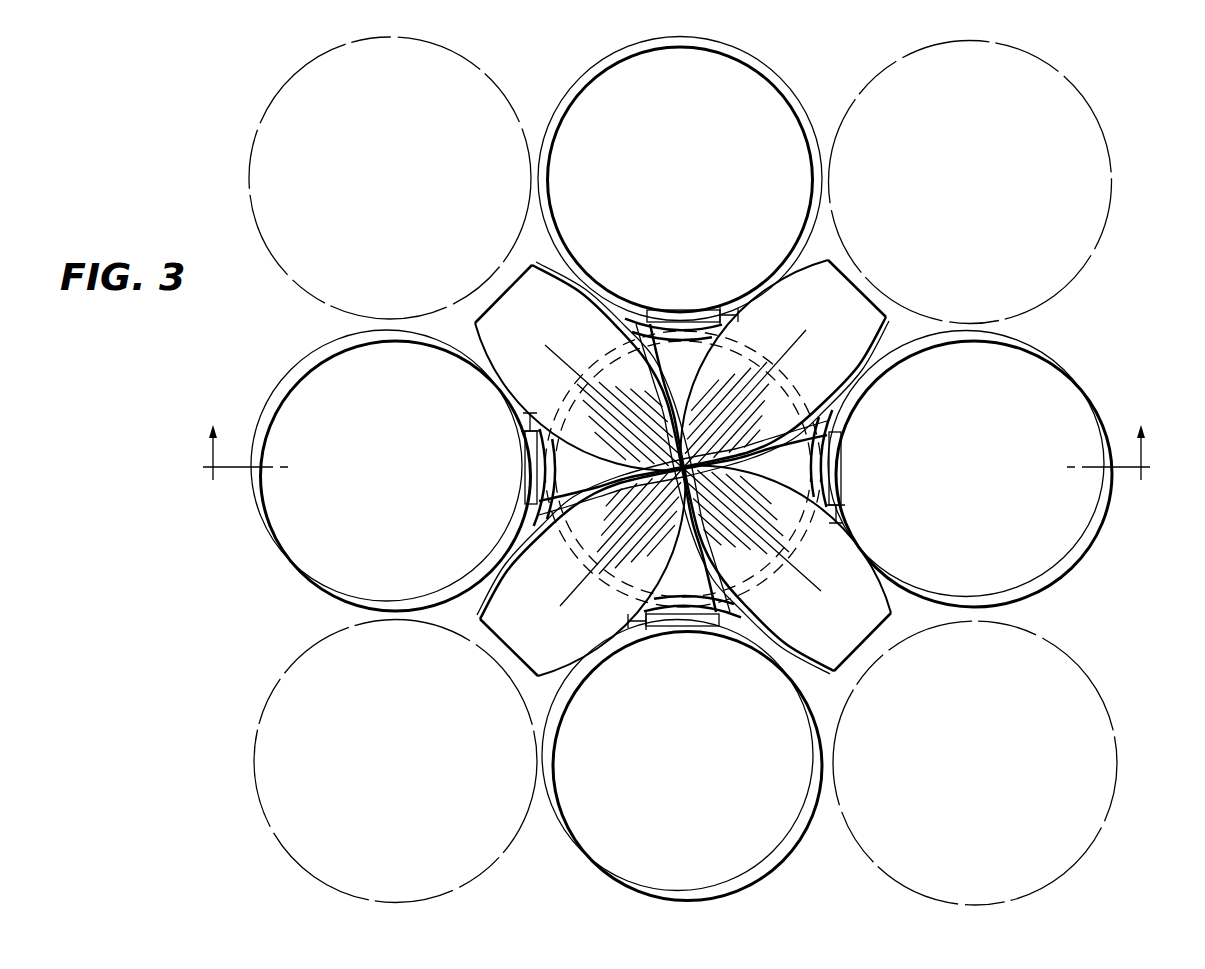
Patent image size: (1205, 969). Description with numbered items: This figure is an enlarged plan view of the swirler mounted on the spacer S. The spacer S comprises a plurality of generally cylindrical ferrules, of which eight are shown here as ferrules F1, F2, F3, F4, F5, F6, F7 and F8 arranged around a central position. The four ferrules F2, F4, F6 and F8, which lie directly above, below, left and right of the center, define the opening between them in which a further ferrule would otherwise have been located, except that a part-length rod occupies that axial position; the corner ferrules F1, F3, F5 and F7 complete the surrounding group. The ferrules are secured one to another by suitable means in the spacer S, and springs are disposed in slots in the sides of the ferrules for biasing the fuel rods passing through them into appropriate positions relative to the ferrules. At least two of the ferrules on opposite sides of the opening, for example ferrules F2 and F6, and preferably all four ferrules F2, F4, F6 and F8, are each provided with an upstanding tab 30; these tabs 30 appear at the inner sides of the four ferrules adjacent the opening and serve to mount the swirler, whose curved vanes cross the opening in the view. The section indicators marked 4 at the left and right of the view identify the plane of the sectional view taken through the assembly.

The ferrule F1 is at (287, 667).
The ferrule F2 is at (290, 365).
The ferrule F3 is at (274, 100).
The ferrule F4 is at (580, 77).
The ferrule F5 is at (1106, 125).
The ferrule F6 is at (981, 469).
The ferrule F7 is at (1085, 672).
The ferrule F8 is at (790, 856).
The upstanding tab 30 is at (683, 309).
The spacer S is at (1097, 545).
The section line 4- 4 is at (676, 441).